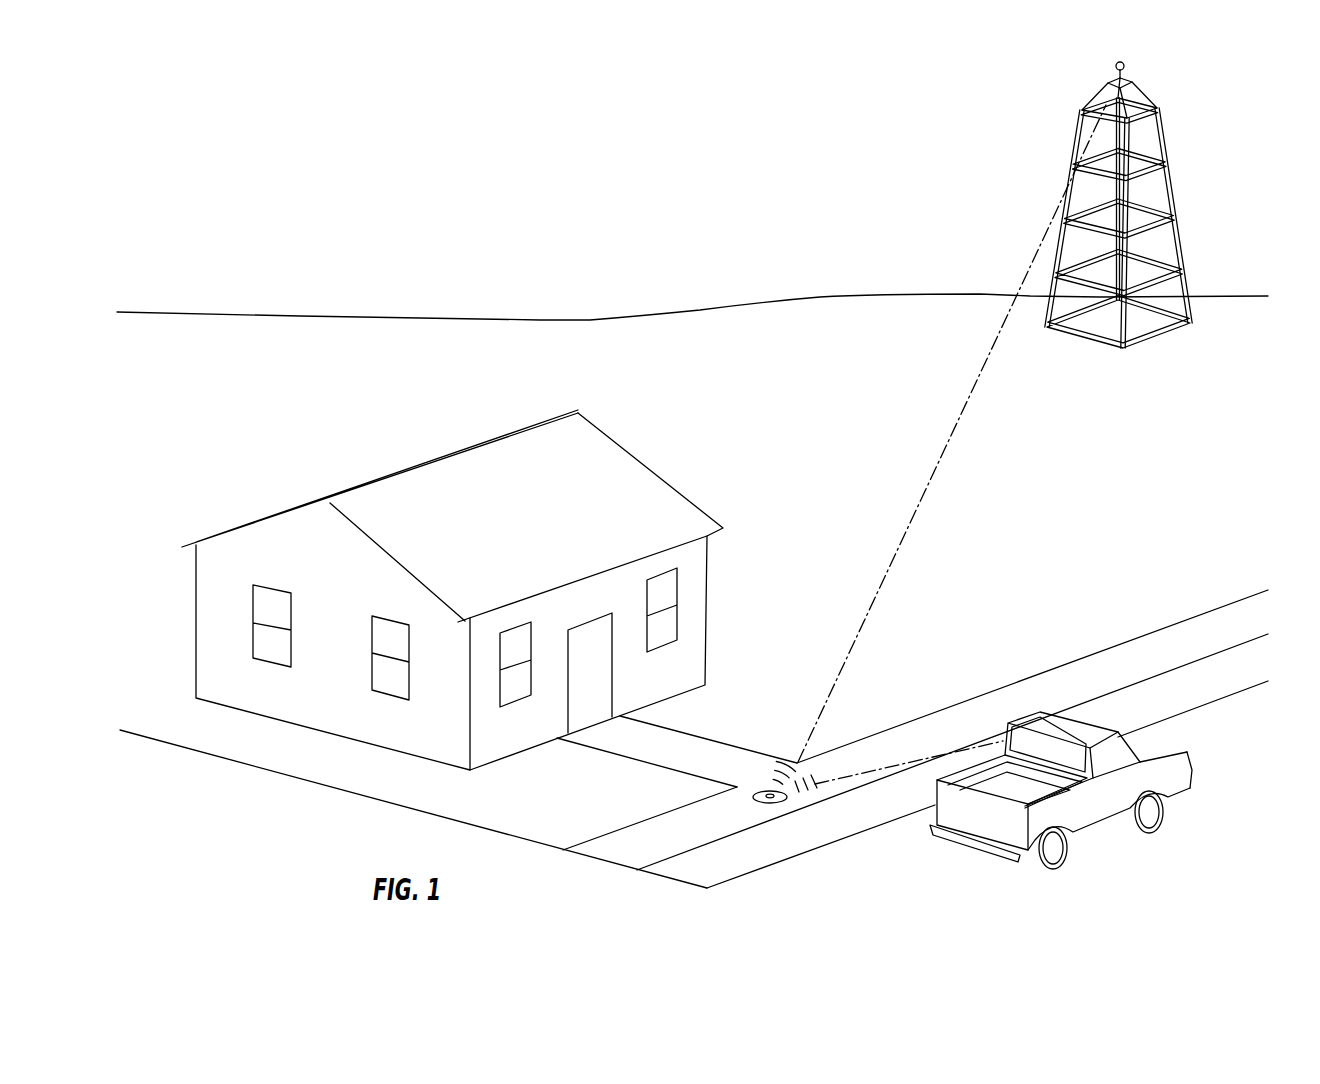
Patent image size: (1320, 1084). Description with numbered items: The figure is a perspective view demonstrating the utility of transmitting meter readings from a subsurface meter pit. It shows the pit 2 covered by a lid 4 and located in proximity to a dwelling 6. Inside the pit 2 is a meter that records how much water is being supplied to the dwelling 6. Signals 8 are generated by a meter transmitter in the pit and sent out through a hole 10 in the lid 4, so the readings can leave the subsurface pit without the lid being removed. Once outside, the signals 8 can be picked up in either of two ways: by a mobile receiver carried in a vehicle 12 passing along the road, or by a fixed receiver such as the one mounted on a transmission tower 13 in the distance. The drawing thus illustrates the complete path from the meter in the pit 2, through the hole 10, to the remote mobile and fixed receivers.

The pit 2 is at (756, 775).
The lid 4 is at (758, 793).
The dwelling 6 is at (730, 592).
The signals 8 is at (862, 605).
The hole 10 is at (772, 800).
The vehicle 12 is at (1115, 718).
The transmission tower 13 is at (1046, 163).